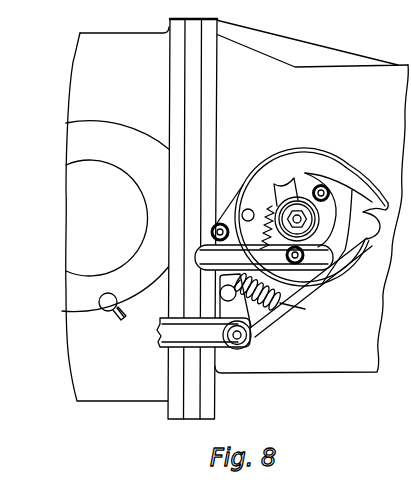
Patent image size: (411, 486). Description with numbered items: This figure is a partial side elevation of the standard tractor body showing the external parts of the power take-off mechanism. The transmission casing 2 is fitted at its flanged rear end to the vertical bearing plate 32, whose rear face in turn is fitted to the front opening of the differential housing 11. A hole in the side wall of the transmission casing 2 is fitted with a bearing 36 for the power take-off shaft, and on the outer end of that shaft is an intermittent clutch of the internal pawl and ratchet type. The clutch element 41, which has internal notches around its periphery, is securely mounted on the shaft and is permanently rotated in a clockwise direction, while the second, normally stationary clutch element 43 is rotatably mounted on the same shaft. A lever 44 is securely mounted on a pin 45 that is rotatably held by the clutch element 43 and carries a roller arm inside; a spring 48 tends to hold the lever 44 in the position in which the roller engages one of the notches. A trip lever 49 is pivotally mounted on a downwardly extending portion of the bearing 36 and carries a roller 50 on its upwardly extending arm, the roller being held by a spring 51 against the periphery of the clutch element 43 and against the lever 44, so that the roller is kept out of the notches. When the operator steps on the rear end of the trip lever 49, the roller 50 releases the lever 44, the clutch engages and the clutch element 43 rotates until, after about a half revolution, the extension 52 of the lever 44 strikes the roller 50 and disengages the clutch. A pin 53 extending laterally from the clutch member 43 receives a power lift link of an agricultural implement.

The transmission casing 2 is at (320, 368).
The differential housing 11 is at (145, 402).
The bearing plate 32 is at (190, 412).
The bearing 36 is at (262, 329).
The clutch element 41 is at (267, 148).
The clutch element 43 is at (228, 200).
The lever 44 is at (346, 255).
The pin 45 is at (303, 256).
The spring 48 is at (260, 248).
The trip lever 49 is at (160, 347).
The roller 50 is at (211, 232).
The spring 51 is at (259, 300).
The extension 52 is at (380, 194).
The pin 53 is at (249, 209).